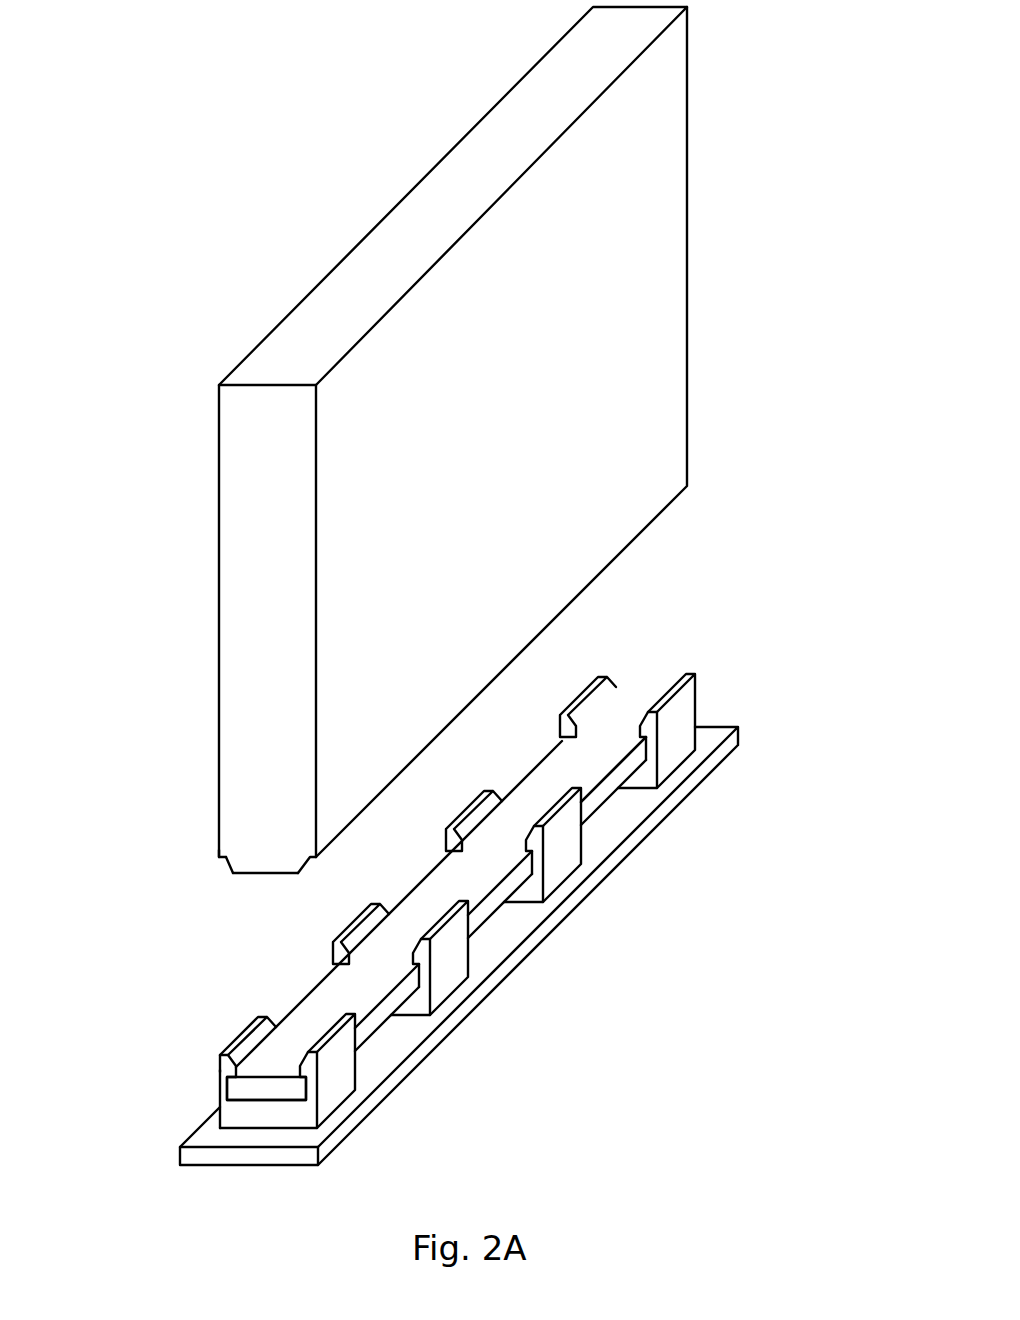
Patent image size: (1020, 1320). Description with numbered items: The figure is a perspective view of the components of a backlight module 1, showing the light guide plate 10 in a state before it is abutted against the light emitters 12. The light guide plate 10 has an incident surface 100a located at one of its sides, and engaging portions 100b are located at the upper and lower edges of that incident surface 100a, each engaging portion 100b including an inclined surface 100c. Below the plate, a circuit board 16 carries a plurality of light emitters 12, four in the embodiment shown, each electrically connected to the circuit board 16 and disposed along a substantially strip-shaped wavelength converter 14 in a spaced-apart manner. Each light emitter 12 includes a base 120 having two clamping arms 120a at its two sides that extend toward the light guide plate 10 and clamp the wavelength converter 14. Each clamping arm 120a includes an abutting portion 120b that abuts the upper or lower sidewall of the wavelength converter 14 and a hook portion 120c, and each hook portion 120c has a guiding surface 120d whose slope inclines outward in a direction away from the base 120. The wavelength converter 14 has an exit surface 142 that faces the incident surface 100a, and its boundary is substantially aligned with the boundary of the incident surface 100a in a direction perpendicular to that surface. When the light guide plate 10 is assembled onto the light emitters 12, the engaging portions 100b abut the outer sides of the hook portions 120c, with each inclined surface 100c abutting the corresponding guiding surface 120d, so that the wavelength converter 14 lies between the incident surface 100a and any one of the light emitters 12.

The backlight module 1 is at (259, 113).
The light guide plate 10 is at (670, 307).
The incident surface 100a is at (266, 875).
The engaging portions 100b is at (222, 860).
The inclined surface 100c is at (228, 867).
The light emitter 12 is at (196, 1105).
The base 120 is at (337, 1073).
The clamping arms 120a is at (110, 1025).
The abutting portion 120b is at (222, 1088).
The hook portion 120c is at (223, 1065).
The guiding surface 120d is at (242, 1052).
The wavelength converter 14 is at (487, 910).
The exit surface 142 is at (631, 712).
The circuit board 16 is at (642, 833).